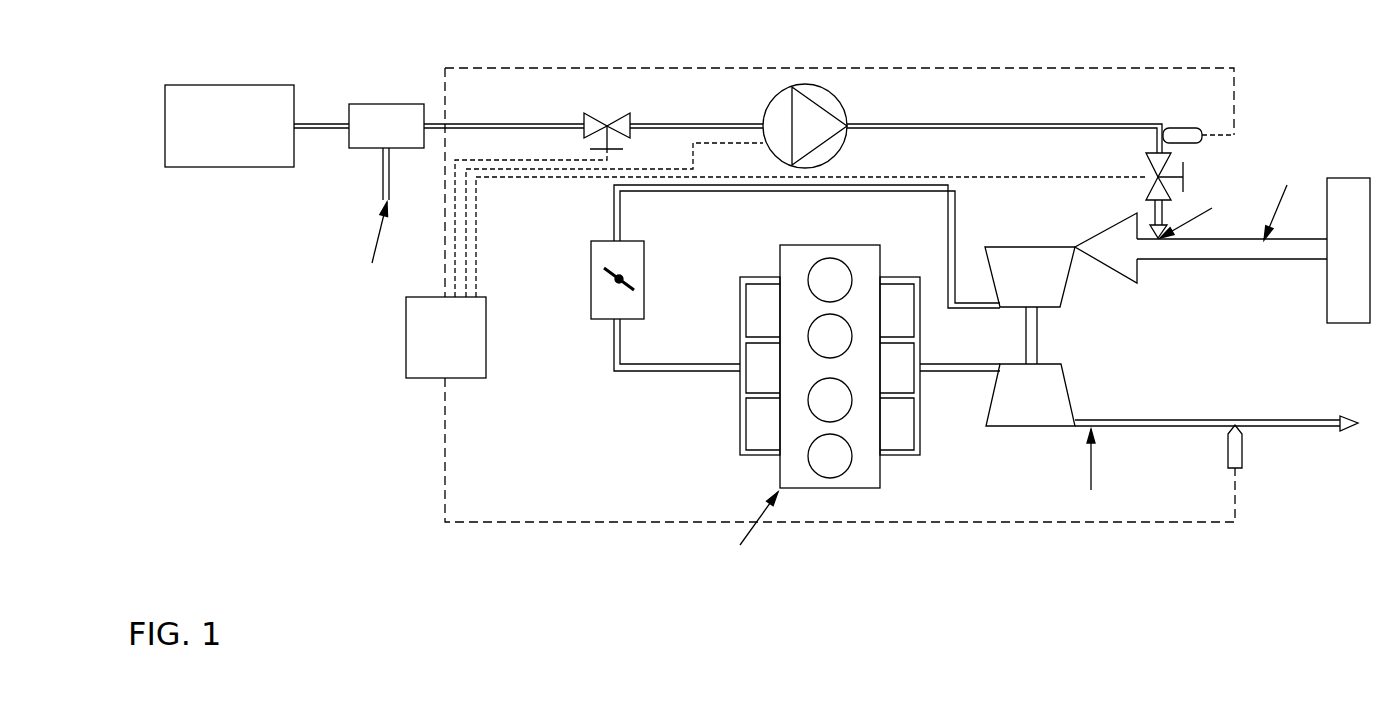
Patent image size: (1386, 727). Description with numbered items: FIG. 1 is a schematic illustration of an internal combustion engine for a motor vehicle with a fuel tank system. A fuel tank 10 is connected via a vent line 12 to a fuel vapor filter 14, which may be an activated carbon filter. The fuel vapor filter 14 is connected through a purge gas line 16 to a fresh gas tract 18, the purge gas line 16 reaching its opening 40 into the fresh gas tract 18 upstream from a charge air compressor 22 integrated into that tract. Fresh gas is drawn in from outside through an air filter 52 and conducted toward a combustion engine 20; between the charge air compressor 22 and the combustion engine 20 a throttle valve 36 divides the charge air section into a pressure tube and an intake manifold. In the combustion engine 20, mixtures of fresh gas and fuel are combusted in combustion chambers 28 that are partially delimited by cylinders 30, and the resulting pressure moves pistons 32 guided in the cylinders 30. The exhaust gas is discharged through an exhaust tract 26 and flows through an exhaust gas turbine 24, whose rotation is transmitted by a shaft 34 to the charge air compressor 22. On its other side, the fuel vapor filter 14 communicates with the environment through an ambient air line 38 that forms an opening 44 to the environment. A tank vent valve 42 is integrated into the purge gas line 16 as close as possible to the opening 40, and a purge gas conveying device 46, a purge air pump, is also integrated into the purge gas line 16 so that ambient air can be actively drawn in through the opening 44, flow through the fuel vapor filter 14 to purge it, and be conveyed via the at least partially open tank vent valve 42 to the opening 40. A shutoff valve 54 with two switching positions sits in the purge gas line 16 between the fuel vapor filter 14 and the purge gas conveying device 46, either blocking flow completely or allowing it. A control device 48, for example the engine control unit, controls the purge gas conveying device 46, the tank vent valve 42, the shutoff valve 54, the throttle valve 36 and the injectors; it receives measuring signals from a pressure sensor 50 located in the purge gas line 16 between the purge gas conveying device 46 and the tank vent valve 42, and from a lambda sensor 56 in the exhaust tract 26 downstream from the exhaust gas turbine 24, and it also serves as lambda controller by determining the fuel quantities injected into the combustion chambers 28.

The fuel tank 10 is at (238, 103).
The vent line 12 is at (322, 125).
The fuel vapor filter 14 is at (386, 117).
The purge gas line 16 is at (488, 125).
The fresh gas tract 18 is at (1232, 208).
The combustion engine 20 is at (817, 410).
The charge air compressor 22 is at (1030, 258).
The exhaust gas turbine 24 is at (1016, 411).
The exhaust tract 26 is at (1215, 465).
The combustion chambers 28 is at (843, 331).
The cylinders 30 is at (843, 456).
The pistons 32 is at (828, 336).
The shaft 34 is at (1032, 328).
The throttle valve 36 is at (606, 302).
The ambient air line 38 is at (386, 172).
The opening of the purge gas line 40 is at (1196, 214).
The tank vent valve 42 is at (1158, 164).
The opening to the environment 44 is at (370, 248).
The purge gas conveying device 46 is at (824, 96).
The control device 48 is at (424, 339).
The pressure sensor 50 is at (1183, 134).
The air filter 52 is at (1352, 190).
The shutoff valve 54 is at (620, 125).
The lambda sensor 56 is at (1234, 447).